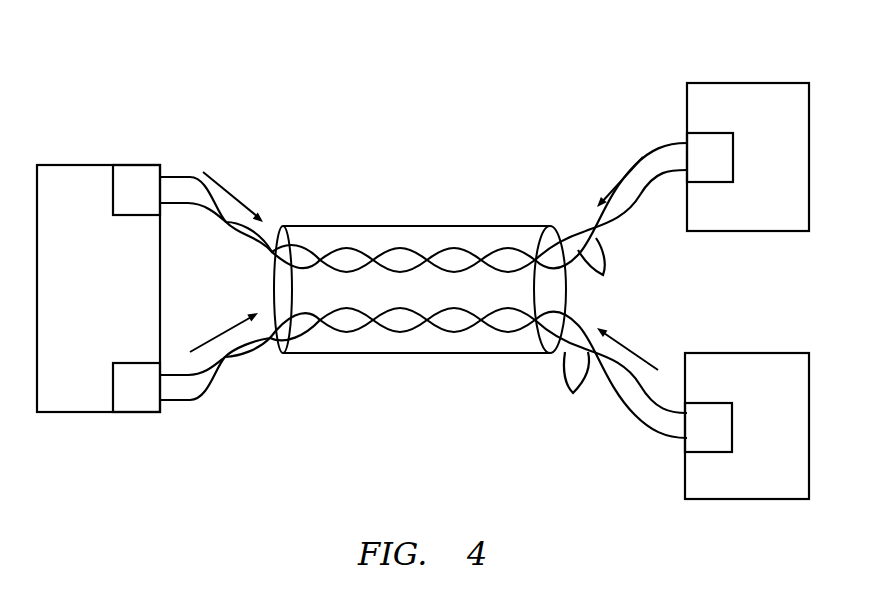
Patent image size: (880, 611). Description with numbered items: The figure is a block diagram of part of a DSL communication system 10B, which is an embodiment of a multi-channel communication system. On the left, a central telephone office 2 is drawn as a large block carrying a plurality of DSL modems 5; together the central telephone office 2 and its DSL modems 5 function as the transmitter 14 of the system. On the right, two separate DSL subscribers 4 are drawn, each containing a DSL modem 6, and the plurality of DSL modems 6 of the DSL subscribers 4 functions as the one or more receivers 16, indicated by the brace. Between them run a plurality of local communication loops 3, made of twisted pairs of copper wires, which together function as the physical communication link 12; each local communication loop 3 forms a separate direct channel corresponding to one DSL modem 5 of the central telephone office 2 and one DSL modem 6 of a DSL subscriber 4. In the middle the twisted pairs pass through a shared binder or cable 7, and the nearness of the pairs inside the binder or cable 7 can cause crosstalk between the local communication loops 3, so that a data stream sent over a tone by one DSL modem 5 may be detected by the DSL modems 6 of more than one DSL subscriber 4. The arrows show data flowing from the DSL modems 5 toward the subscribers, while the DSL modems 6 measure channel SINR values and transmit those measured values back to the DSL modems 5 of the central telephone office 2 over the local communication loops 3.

The DSL communication system 10B is at (586, 62).
The transmitter 14 is at (114, 146).
The central telephone office 2 is at (76, 298).
The DSL modem 5 is at (136, 203).
The physical communication link 12 is at (438, 397).
The binder or cable 7 is at (424, 226).
The local communication loop 3 is at (580, 325).
The receivers 16 is at (813, 83).
The DSL subscriber 4 is at (789, 211).
The DSL modem 6 is at (714, 170).